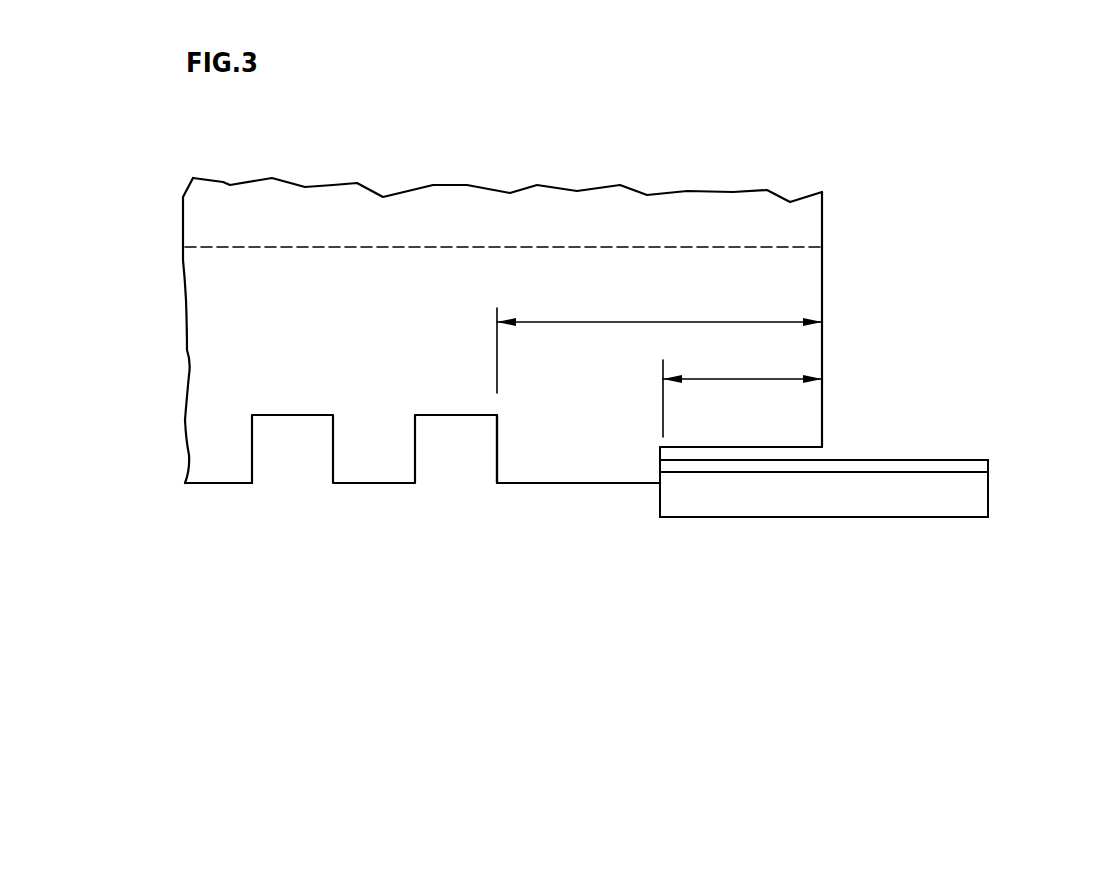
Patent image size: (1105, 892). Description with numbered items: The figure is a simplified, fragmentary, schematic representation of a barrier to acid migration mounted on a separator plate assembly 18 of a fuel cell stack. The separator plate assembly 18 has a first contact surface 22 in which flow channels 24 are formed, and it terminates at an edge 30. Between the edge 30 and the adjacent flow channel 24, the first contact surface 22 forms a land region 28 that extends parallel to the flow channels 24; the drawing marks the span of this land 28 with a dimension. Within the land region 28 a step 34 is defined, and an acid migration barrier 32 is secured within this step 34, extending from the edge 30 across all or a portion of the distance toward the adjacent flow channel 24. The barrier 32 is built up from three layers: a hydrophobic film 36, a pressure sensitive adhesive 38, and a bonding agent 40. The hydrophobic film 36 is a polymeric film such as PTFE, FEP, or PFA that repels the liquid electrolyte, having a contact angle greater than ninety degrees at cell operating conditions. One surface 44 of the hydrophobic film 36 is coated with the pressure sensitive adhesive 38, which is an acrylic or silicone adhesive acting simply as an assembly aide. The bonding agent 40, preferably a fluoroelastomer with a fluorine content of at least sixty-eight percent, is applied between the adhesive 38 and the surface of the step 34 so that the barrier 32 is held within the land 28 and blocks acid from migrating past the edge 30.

The separator plate assembly 18 is at (296, 329).
The first contact surface 22 is at (204, 488).
The flow channel 24 is at (497, 468).
The land region 28 is at (598, 347).
The edge 30 is at (822, 360).
The acid migration barrier 32 is at (695, 521).
The step 34 is at (758, 404).
The hydrophobic film 36 is at (835, 510).
The pressure sensitive adhesive 38 is at (848, 467).
The bonding agent 40 is at (812, 456).
The surface 44 is at (960, 473).